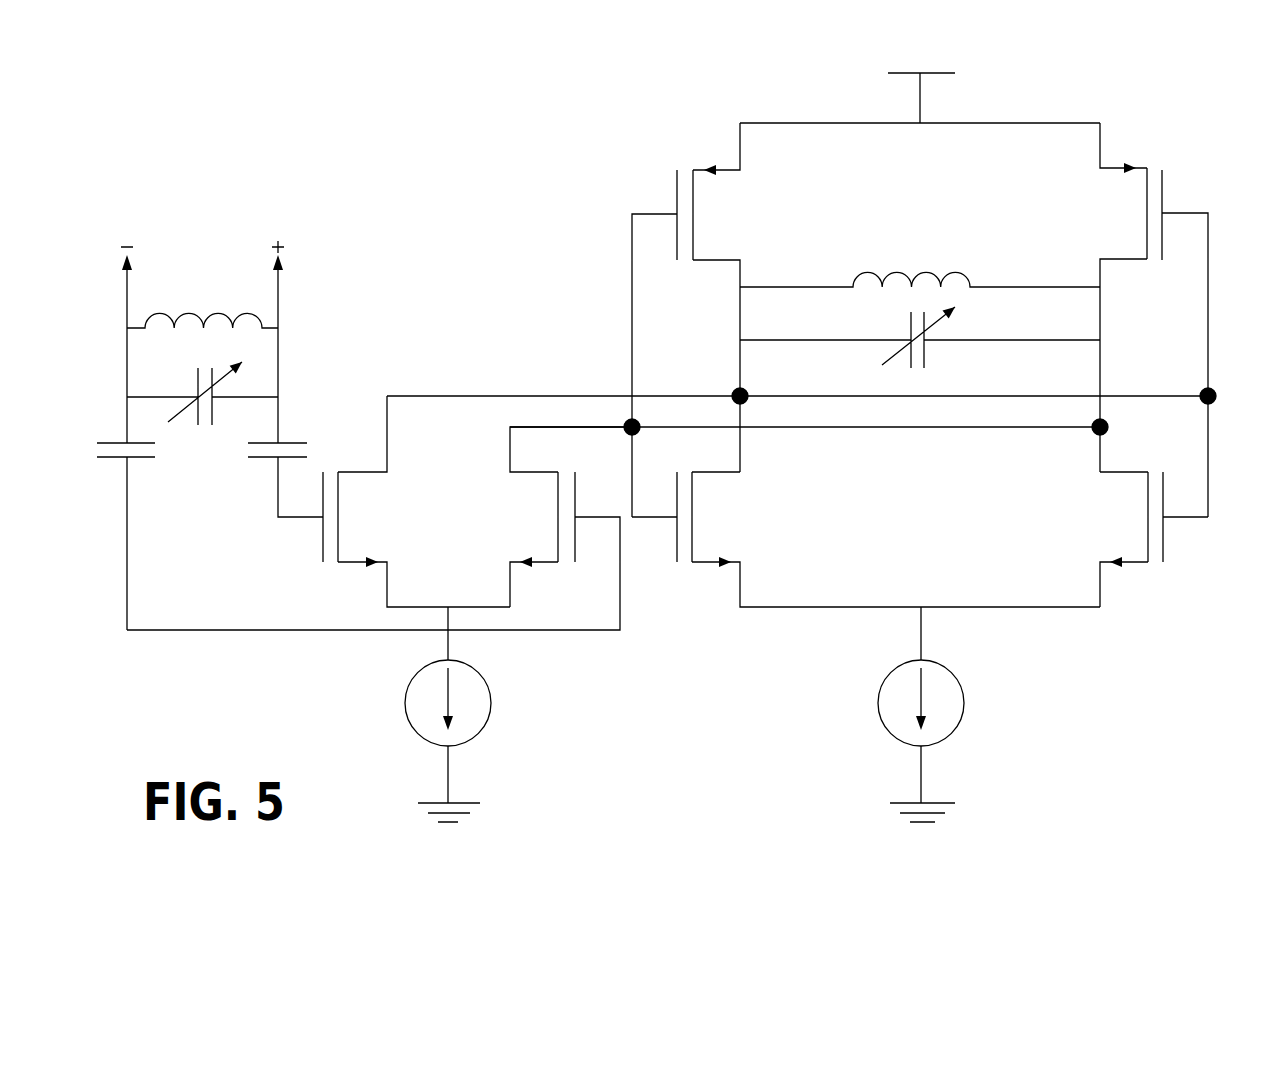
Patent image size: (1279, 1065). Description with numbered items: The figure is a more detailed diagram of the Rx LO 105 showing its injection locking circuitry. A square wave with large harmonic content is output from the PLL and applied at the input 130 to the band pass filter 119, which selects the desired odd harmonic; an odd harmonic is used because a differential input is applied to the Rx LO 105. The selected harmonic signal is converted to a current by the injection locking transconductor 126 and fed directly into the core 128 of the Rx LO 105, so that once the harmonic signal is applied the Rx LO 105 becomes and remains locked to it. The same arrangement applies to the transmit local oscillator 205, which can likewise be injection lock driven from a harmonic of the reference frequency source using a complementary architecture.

The input from PLL 130 is at (202, 255).
The band pass filter 119 is at (262, 377).
The injection locking transconductor 126 is at (468, 582).
The core 128 is at (962, 535).
The Rx LO 105 is at (823, 295).
The transmit local oscillator 205 is at (1217, 253).